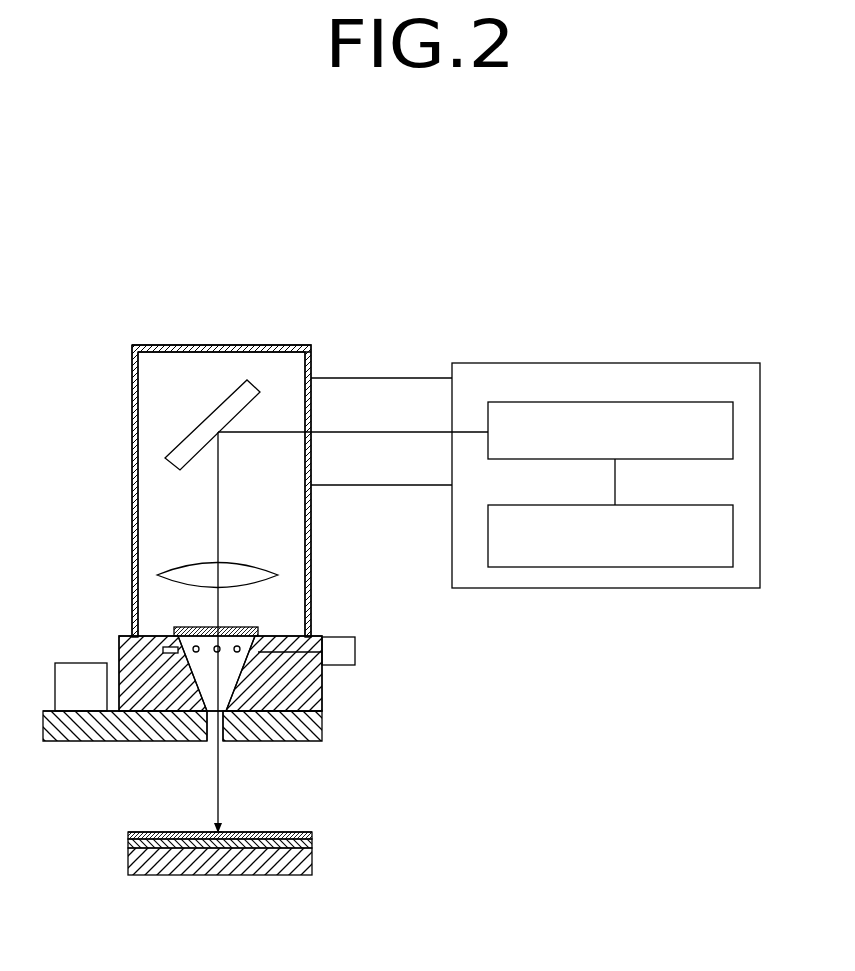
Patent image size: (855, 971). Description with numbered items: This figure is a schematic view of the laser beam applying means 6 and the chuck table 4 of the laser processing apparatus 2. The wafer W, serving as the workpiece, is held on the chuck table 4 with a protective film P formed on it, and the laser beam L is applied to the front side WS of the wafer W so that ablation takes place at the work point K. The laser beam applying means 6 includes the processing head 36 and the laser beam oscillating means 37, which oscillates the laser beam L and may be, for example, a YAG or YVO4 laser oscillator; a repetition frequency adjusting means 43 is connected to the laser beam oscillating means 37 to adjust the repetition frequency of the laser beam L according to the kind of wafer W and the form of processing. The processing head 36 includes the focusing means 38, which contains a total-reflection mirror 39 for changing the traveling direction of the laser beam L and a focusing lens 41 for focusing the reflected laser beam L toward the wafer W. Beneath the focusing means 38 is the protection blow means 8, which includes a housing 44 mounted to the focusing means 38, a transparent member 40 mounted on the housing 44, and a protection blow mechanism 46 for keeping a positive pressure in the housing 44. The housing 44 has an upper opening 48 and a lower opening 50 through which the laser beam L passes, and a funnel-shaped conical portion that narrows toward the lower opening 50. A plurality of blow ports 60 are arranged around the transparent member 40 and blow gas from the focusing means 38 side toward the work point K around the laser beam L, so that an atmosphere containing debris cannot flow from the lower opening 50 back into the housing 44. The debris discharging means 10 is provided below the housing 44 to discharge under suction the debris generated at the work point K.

The laser processing apparatus 2 is at (610, 358).
The chuck table 4 is at (205, 875).
The laser beam applying means 6 is at (378, 340).
The protection blow means 8 is at (332, 698).
The debris discharging means 10 is at (88, 742).
The processing head 36 is at (105, 636).
The laser beam oscillating means 37 is at (733, 438).
The focusing means 38 is at (228, 342).
The total-reflection mirror 39 is at (225, 410).
The transparent member 40 is at (250, 632).
The focusing lens 41 is at (238, 568).
The repetition frequency adjusting means 43 is at (733, 532).
The housing 44 is at (322, 688).
The protection blow mechanism 46 is at (355, 648).
The upper opening 48 is at (183, 636).
The lower opening 50 is at (223, 733).
The blow ports 60 is at (196, 646).
The laser beam L is at (215, 520).
The wafer W is at (315, 843).
The front side of the wafer WS is at (150, 832).
The protective film P is at (302, 832).
The work point K is at (212, 829).